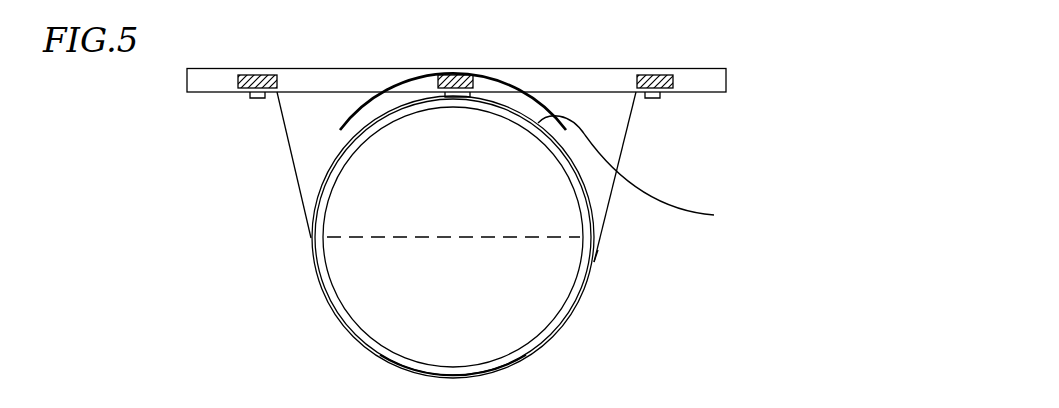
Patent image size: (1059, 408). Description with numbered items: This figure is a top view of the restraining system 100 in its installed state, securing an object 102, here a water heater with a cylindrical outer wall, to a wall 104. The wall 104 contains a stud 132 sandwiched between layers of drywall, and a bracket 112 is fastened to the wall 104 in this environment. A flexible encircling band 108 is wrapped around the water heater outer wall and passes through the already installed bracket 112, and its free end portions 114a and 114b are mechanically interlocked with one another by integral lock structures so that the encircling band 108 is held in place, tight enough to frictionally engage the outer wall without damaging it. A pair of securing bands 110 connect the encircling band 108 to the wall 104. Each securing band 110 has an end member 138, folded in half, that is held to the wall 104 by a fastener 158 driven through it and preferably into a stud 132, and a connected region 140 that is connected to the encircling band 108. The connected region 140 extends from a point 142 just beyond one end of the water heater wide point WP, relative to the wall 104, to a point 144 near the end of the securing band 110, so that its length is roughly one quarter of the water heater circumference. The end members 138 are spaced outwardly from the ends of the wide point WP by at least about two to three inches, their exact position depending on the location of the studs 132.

The restraining system 100 is at (238, 181).
The object 102 is at (392, 317).
The wall 104 is at (578, 69).
The encircling band 108 is at (651, 173).
The securing band 110 is at (621, 220).
The bracket 112 is at (422, 70).
The free end portion 114a is at (399, 103).
The free end portion 114b is at (418, 107).
The stud 132 is at (471, 72).
The end member 138 is at (673, 97).
The connected region 140 is at (558, 338).
The point 142 is at (590, 288).
The point 144 is at (462, 378).
The fastener 158 is at (649, 97).
The wide point WP is at (454, 237).